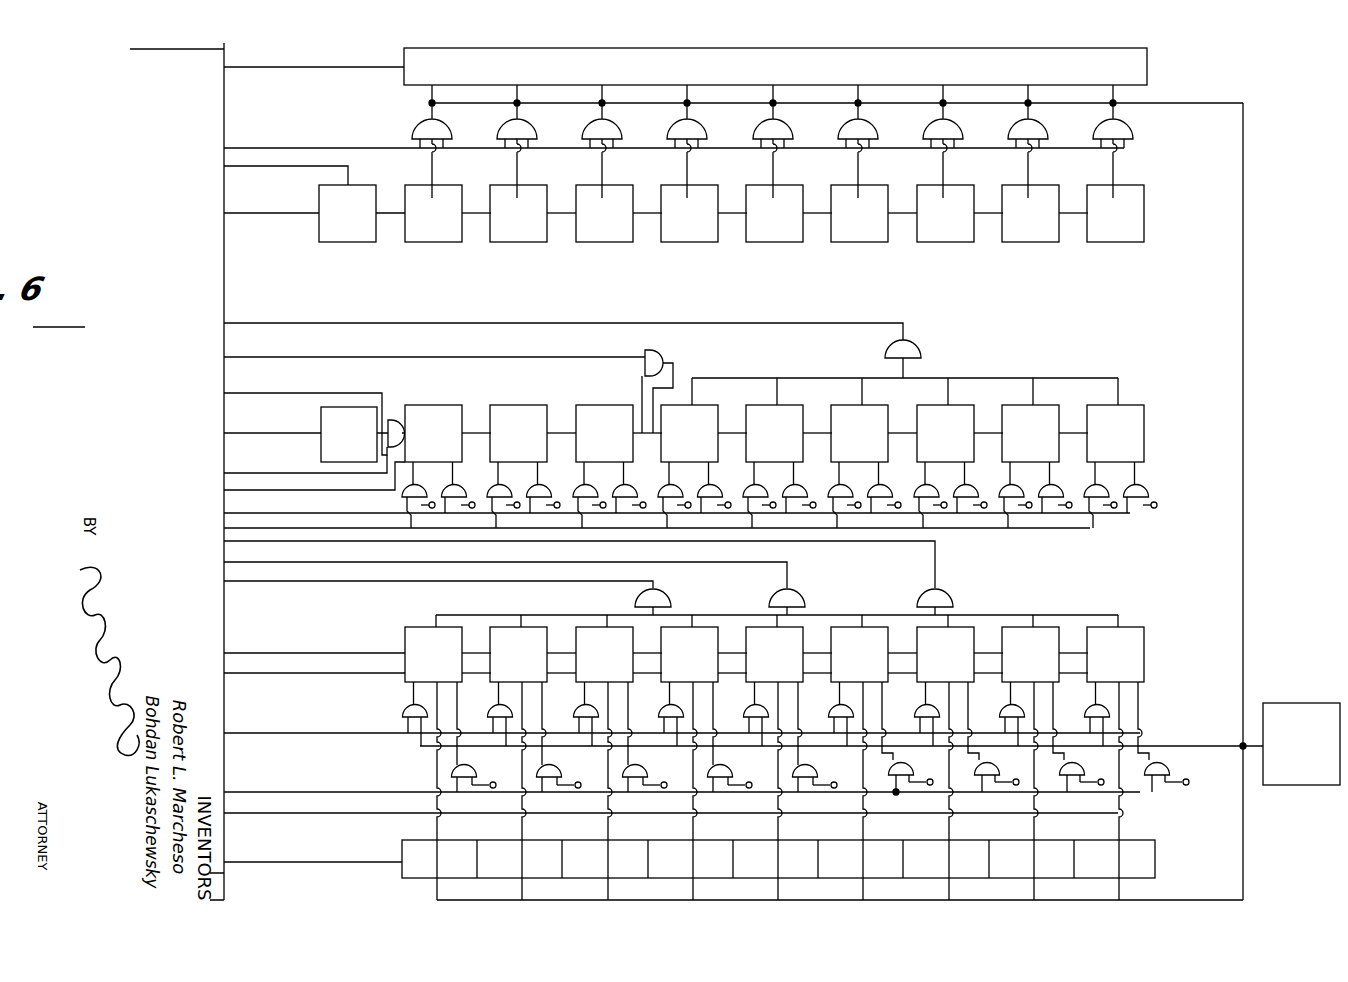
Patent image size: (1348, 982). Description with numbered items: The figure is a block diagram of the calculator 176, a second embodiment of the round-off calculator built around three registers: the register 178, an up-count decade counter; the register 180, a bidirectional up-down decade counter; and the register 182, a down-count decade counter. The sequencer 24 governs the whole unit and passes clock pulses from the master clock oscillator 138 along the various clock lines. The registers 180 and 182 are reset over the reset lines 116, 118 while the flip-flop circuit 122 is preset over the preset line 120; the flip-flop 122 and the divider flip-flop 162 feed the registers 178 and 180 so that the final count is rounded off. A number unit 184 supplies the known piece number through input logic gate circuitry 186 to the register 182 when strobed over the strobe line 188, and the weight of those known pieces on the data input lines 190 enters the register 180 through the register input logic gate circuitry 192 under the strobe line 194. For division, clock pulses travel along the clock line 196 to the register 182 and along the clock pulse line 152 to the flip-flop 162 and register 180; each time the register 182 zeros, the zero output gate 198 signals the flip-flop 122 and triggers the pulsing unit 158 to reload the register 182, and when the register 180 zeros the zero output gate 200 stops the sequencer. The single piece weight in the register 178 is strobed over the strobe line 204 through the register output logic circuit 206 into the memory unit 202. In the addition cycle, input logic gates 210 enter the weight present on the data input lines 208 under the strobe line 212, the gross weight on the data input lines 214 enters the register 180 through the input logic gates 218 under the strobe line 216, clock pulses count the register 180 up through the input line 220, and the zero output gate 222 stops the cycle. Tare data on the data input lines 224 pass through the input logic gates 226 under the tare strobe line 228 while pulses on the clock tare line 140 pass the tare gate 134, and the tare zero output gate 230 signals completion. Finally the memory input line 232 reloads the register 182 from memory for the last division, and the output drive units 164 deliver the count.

The sequencer 24 is at (206, 87).
The master clock oscillator 138 is at (224, 44).
The output drive units 164 is at (1147, 67).
The register output logic circuit 206 is at (1135, 132).
The strobe line 204 is at (283, 148).
The register 178 is at (1147, 218).
The flip-flop circuit 122 is at (341, 244).
The preset line 120 is at (256, 172).
The zero output gate 200 is at (916, 346).
The clock tare line 140 is at (480, 345).
The tare gate 134 is at (664, 355).
The divider flip-flop 162 is at (332, 426).
The clock pulse line 152 is at (224, 433).
The input line 220 is at (224, 473).
The reset line 118 is at (224, 490).
The register 180 is at (1147, 430).
The register input logic gate circuitry 192 is at (402, 486).
The input logic gates 218 is at (784, 487).
The data input lines 190 is at (1115, 545).
The data input lines 214 is at (1117, 545).
The strobe line 216 is at (224, 513).
The strobe line 194 is at (224, 562).
The zero output gate 198 is at (928, 593).
The tare zero output gate 230 is at (777, 597).
The zero output gate 222 is at (638, 595).
The register 182 is at (1147, 651).
The clock line 196 is at (271, 654).
The reset line 116 is at (258, 675).
The input logic gate circuitry 186 is at (1095, 706).
The strobe line 188 is at (255, 733).
The input logic gates 210 is at (828, 759).
The data input lines 208 is at (649, 794).
The strobe line 212 is at (250, 792).
The tare strobe line 228 is at (257, 813).
The input logic gates 226 is at (1181, 758).
The data input lines 224 is at (1173, 806).
The memory input line 232 is at (287, 862).
The memory unit 202 is at (1155, 864).
The calculator 176 is at (1262, 100).
The number unit 184 is at (1297, 714).
The pulsing unit 158 is at (224, 899).